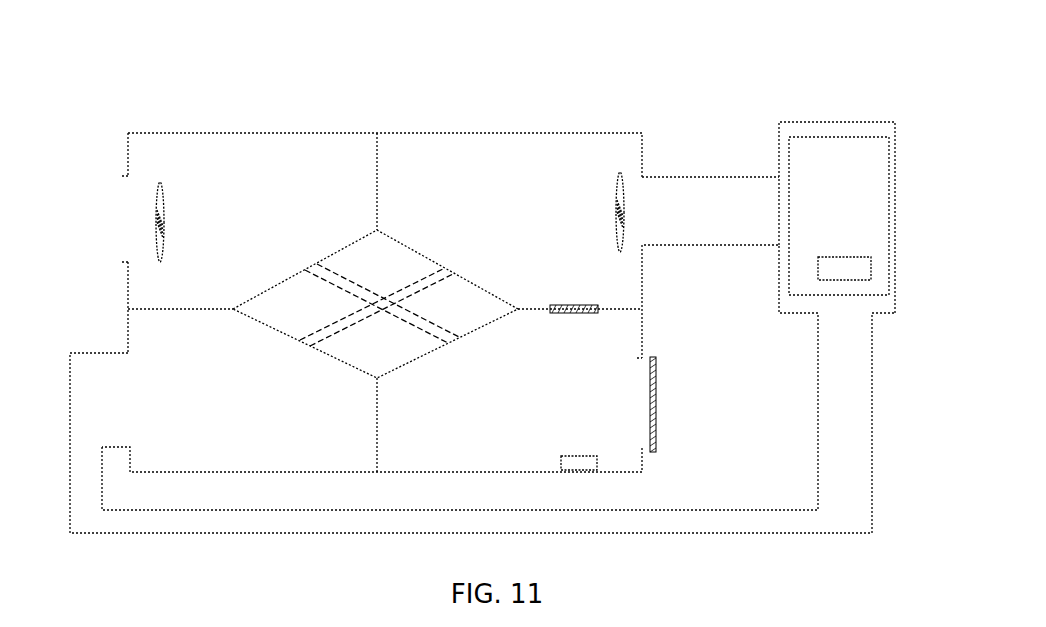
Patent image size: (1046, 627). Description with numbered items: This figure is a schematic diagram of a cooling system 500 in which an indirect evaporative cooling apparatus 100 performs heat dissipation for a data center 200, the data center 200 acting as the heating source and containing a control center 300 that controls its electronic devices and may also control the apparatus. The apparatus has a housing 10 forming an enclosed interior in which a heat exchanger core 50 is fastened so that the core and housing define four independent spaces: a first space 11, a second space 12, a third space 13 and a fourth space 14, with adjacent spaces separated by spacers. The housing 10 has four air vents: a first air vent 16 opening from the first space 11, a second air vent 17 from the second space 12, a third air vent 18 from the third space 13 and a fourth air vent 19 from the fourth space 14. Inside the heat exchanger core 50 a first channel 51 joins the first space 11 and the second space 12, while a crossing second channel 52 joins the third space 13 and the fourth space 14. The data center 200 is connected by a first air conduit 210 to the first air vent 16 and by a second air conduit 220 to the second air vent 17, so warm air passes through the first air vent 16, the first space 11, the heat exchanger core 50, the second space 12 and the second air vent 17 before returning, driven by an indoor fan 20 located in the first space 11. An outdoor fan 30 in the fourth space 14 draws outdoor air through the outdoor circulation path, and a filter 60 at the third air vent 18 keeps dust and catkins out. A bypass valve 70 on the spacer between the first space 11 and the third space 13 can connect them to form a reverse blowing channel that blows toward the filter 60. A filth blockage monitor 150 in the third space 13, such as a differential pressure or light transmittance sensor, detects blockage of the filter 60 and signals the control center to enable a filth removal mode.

The housing 10 is at (415, 133).
The first space 11 is at (507, 155).
The second space 12 is at (267, 440).
The third space 13 is at (466, 423).
The fourth space 14 is at (257, 160).
The first air vent 16 is at (645, 220).
The second air vent 17 is at (133, 407).
The third air vent 18 is at (653, 400).
The fourth air vent 19 is at (128, 222).
The indoor fan 20 is at (618, 200).
The outdoor fan 30 is at (165, 199).
The heat exchanger core 50 is at (387, 245).
The first channel 51 is at (430, 272).
The second channel 52 is at (450, 342).
The filter 60 is at (653, 400).
The bypass valve 70 is at (572, 305).
The indirect evaporative cooling apparatus 100 is at (633, 125).
The filth blockage monitor 150 is at (583, 463).
The data center 200 is at (793, 125).
The first air conduit 210 is at (692, 197).
The second air conduit 220 is at (863, 405).
The control center 300 is at (863, 272).
The cooling system 500 is at (755, 42).